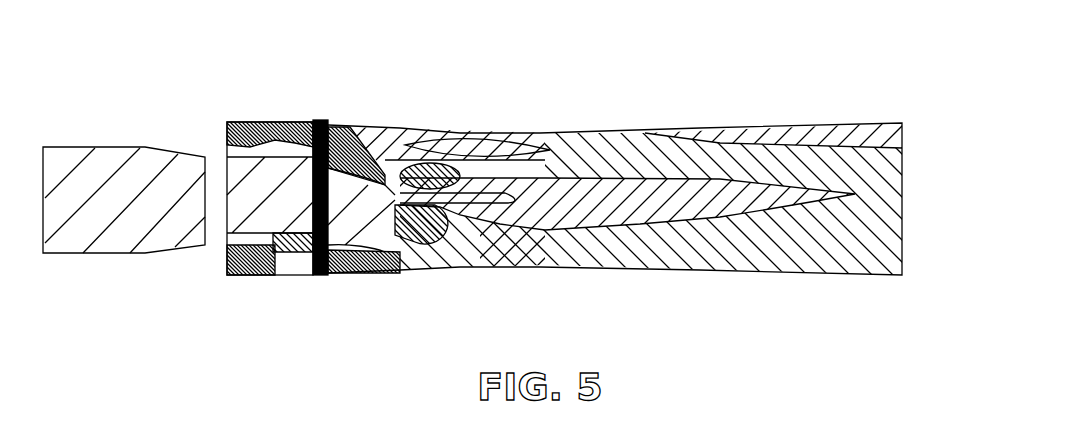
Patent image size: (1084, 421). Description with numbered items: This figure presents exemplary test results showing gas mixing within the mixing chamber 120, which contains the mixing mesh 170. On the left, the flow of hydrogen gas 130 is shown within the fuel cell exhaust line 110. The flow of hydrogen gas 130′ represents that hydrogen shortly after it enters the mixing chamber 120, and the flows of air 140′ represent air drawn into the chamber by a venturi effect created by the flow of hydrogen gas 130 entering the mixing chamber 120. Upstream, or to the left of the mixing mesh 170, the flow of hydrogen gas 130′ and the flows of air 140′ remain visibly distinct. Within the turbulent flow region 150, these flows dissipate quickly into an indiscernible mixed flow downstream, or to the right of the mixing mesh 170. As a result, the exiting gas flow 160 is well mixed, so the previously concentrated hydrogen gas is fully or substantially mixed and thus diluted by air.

The fuel cell exhaust line 110 is at (108, 147).
The mixing chamber 120 is at (645, 132).
The flow of hydrogen gas 130 is at (128, 217).
The flow of hydrogen gas 130′ is at (258, 193).
The flows of air 140′ is at (290, 122).
The turbulent flow region 150 is at (457, 173).
The exiting gas flow 160 is at (870, 233).
The mixing mesh 170 is at (317, 120).